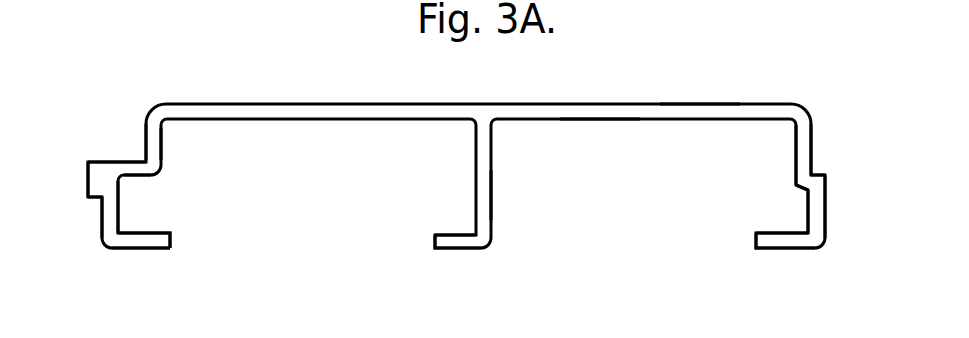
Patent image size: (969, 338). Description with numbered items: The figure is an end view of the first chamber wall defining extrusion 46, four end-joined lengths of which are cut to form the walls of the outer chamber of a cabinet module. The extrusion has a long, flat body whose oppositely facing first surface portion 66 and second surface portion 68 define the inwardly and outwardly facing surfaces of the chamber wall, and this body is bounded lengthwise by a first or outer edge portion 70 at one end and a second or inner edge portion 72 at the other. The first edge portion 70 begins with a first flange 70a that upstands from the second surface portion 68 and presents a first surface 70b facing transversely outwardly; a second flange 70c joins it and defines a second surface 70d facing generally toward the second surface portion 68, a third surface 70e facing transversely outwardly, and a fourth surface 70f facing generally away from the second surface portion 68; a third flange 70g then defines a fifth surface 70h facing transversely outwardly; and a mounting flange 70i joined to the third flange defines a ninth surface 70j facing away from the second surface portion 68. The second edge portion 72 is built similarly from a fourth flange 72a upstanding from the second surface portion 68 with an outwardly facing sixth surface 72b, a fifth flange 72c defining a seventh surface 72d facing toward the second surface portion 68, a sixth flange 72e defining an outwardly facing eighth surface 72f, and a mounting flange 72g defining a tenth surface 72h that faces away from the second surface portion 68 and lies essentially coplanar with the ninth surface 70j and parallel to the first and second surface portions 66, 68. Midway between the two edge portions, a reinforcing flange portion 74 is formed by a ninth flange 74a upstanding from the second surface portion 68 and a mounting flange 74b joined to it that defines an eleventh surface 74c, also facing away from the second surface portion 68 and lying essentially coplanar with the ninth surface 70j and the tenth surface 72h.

The first chamber wall defining extrusion 46 is at (698, 70).
The first surface portion 66 is at (605, 105).
The second surface portion 68 is at (597, 122).
The first edge portion 70 is at (128, 78).
The first part or flange 70a is at (152, 138).
The first surface 70b is at (146, 128).
The second part or flange 70c is at (104, 182).
The second surface 70d is at (100, 160).
The third surface 70e is at (86, 167).
The fourth surface 70f is at (98, 206).
The third part or flange 70g is at (108, 212).
The fifth surface 70h is at (100, 220).
The seventh part or mounting flange 70i is at (140, 240).
The ninth surface 70j is at (125, 248).
The second edge portion 72 is at (817, 103).
The fourth part or flange 72a is at (795, 142).
The sixth surface 72b is at (815, 130).
The fifth part or flange 72c is at (800, 192).
The seventh surface 72d is at (817, 176).
The sixth part or flange 72e is at (810, 210).
The eighth surface 72f is at (827, 195).
The eighth part or mounting flange 72g is at (770, 238).
The tenth surface 72h is at (793, 248).
The reinforcing flange portion 74 is at (447, 187).
The ninth part or flange 74a is at (482, 195).
The tenth part or mounting flange 74b is at (450, 233).
The eleventh surface 74c is at (437, 249).